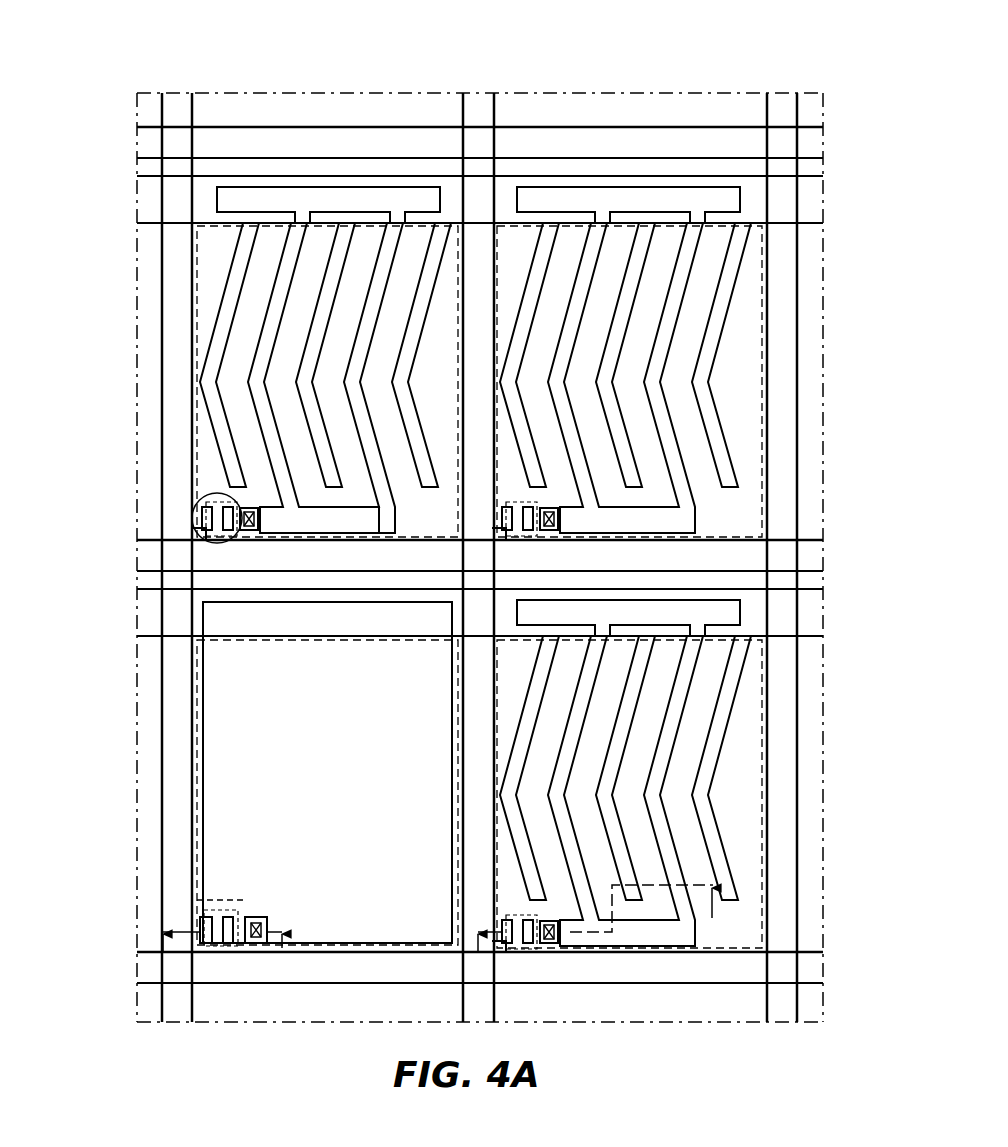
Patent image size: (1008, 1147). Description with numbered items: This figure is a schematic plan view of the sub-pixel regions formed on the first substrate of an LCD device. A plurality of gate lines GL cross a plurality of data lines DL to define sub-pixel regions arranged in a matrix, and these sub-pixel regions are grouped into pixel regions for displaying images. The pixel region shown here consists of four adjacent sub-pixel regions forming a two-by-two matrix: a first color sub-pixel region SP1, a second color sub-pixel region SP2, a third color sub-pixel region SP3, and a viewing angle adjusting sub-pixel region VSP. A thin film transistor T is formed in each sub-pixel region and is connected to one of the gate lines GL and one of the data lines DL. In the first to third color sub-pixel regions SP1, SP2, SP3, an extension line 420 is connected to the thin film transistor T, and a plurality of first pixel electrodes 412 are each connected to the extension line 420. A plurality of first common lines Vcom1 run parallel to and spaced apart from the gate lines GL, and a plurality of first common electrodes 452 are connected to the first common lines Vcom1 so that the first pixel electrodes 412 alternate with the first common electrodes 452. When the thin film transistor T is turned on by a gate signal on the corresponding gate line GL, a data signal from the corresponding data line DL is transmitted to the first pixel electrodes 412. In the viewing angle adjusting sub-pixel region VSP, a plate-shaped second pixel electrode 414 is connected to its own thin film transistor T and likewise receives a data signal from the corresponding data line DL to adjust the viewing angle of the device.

The first pixel electrode 412 is at (262, 427).
The second pixel electrode 414 is at (220, 822).
The extension line 420 is at (346, 512).
The first common electrode 452 is at (310, 338).
The data line DL is at (177, 103).
The gate line GL is at (143, 556).
The thin film transistor T is at (198, 507).
The first color sub-pixel region SP1 is at (195, 262).
The second color sub-pixel region SP2 is at (765, 296).
The third color sub-pixel region SP3 is at (765, 732).
The viewing angle adjusting sub-pixel region VSP is at (256, 793).
The first common line Vcom1 is at (140, 607).